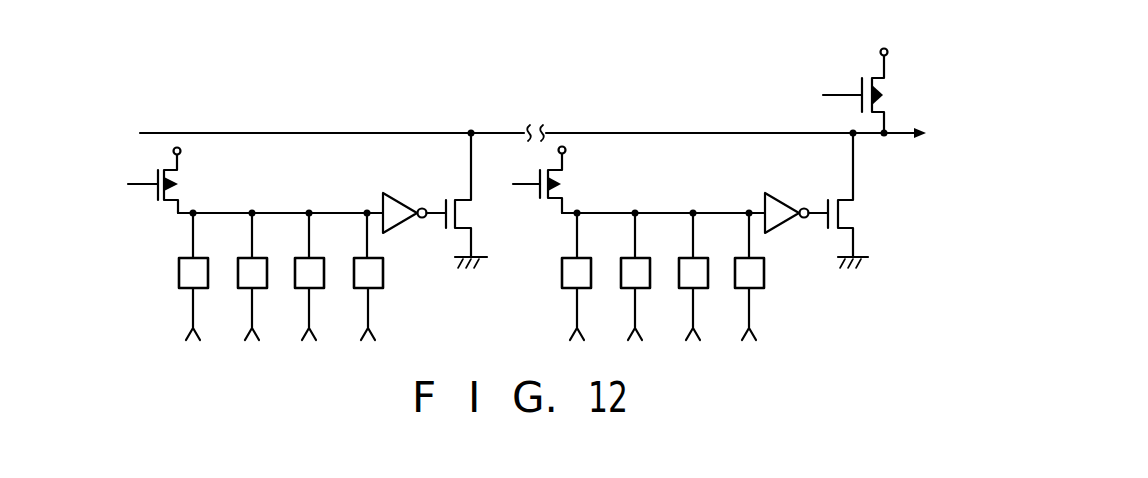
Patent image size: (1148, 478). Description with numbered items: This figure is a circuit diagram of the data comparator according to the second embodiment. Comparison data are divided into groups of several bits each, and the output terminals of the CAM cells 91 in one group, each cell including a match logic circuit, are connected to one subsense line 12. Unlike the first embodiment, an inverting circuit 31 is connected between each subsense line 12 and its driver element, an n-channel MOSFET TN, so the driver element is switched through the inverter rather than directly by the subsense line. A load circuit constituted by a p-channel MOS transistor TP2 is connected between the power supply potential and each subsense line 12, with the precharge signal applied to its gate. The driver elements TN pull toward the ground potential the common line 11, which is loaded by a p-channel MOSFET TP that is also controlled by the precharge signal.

The output line 11 is at (650, 131).
The subsense line 12 is at (296, 212).
The inverting circuit 31 is at (409, 207).
The CAM cell 91 is at (180, 272).
The p-channel MOSFET TP is at (887, 90).
The p-channel MOS transistor TP2 is at (181, 184).
The n-channel MOSFET TN is at (458, 214).